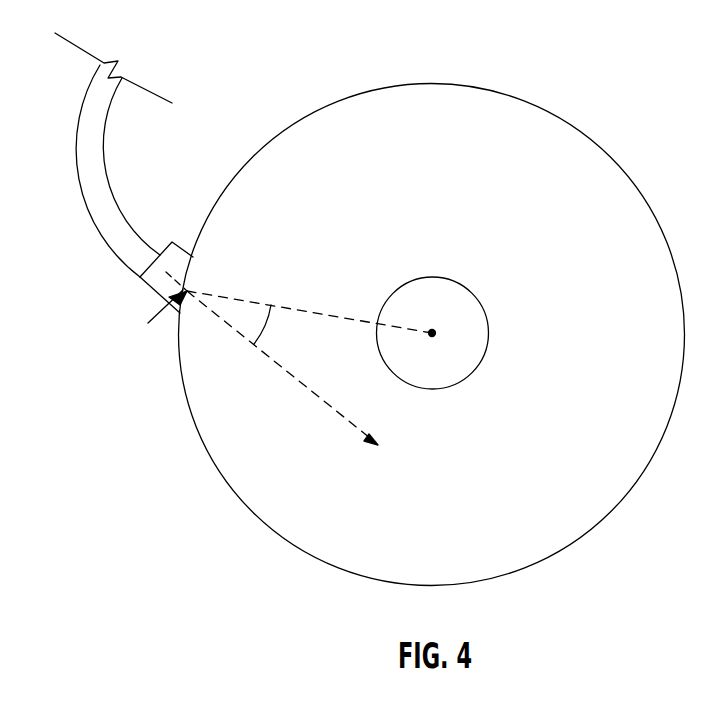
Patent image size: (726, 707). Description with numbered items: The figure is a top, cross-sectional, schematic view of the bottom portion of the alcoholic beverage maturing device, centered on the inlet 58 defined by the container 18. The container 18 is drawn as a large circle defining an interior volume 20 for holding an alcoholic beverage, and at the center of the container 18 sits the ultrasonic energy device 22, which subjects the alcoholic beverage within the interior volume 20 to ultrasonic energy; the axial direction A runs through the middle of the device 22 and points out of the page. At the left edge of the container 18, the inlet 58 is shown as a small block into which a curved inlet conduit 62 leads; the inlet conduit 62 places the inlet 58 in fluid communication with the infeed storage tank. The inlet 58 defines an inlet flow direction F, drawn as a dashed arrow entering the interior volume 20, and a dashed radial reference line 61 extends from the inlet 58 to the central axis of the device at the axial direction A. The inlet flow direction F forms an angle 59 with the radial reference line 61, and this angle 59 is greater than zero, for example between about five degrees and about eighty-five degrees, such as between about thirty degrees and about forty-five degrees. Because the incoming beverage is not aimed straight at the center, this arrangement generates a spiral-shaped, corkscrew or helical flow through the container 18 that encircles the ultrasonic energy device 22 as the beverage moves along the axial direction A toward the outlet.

The container 18 is at (497, 88).
The interior volume 20 is at (548, 168).
The ultrasonic energy device 22 is at (493, 347).
The axial direction A is at (432, 333).
The inlet conduit 62 is at (80, 183).
The inlet 58 is at (170, 307).
The radial reference line 61 is at (317, 315).
The angle 59 is at (273, 323).
The inlet flow direction F is at (332, 403).